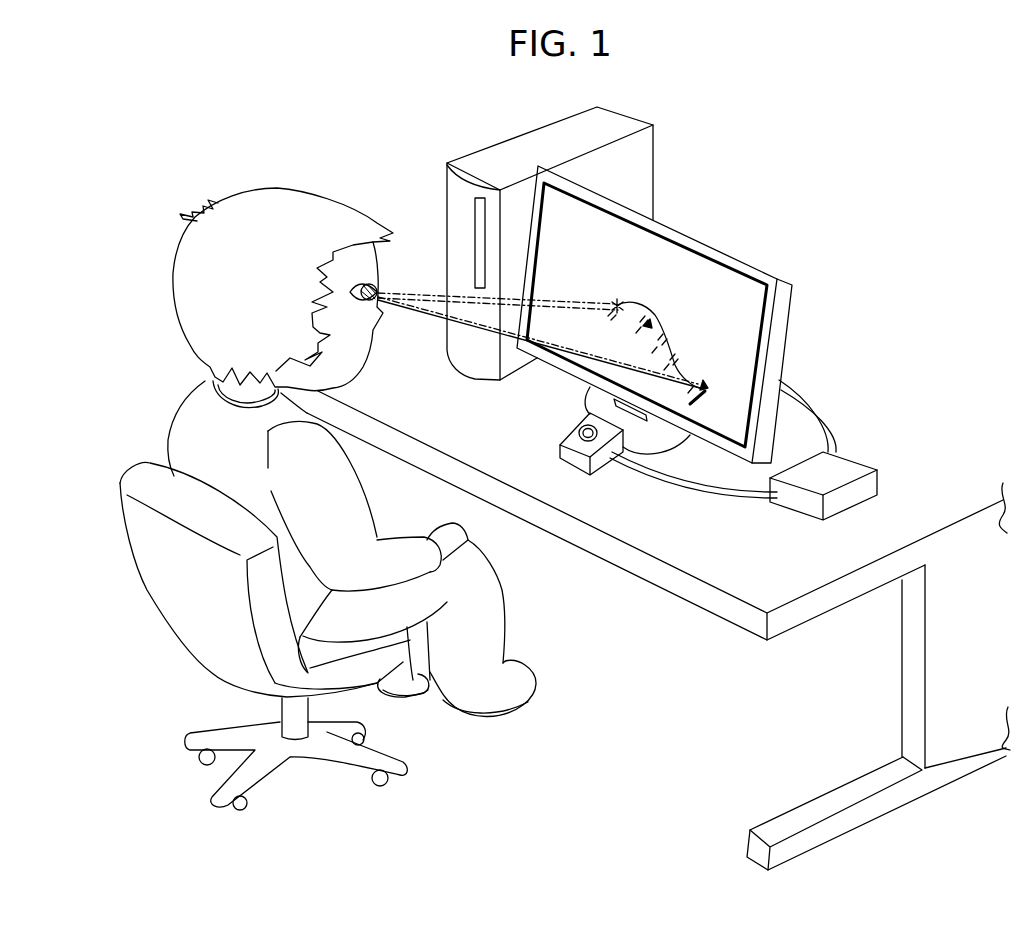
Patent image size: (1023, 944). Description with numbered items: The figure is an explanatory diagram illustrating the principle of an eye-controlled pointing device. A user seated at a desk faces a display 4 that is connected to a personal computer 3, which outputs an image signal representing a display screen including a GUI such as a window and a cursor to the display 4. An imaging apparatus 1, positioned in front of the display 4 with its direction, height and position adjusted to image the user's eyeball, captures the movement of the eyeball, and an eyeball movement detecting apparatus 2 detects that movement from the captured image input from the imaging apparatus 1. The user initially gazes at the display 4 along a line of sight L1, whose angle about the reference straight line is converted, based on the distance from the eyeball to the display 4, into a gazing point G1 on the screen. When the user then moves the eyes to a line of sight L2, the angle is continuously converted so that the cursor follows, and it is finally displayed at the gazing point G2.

The imaging apparatus 1 is at (600, 468).
The eyeball movement detecting apparatus 2 is at (850, 466).
The personal computer 3 is at (623, 113).
The display 4 is at (697, 295).
The gazing point G1 is at (618, 306).
The gazing point G2 is at (704, 388).
The line of sight L1 is at (446, 296).
The line of sight L2 is at (434, 305).